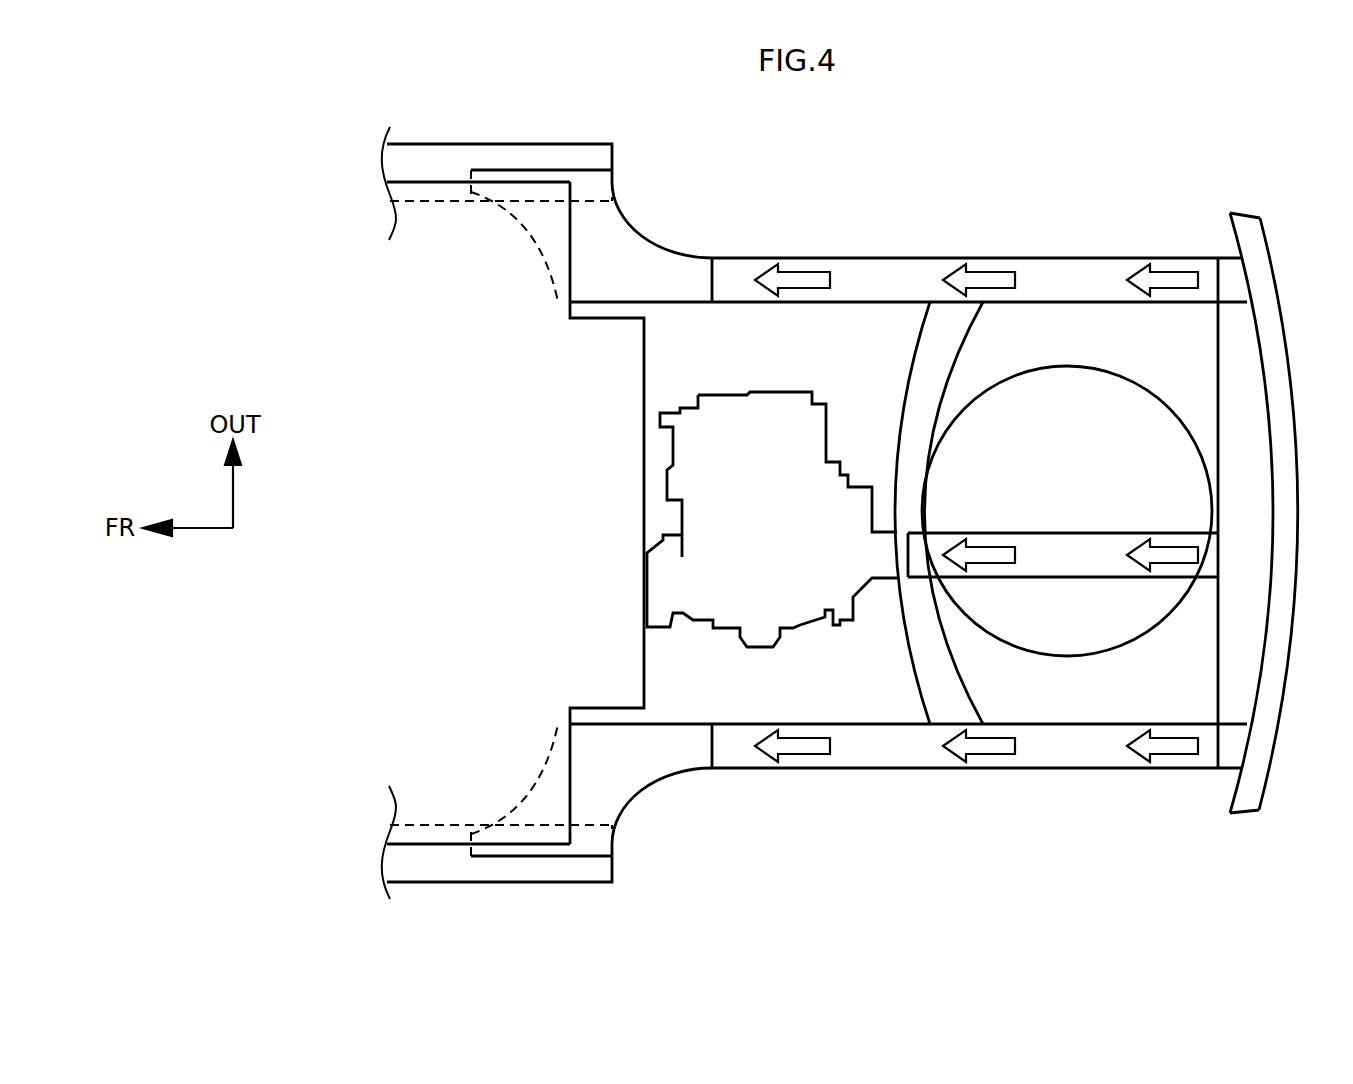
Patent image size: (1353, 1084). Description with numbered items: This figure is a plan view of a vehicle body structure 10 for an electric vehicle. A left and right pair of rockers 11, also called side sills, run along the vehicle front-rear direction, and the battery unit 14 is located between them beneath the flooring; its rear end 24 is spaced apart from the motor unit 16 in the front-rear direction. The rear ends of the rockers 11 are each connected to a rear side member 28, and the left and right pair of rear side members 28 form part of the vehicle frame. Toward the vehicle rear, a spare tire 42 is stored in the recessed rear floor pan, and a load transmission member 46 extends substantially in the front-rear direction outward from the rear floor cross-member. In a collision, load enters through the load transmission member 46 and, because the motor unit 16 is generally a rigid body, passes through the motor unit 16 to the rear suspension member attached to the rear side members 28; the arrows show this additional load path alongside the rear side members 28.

The vehicle body structure 10 is at (1000, 213).
The rockers 11 is at (442, 157).
The battery unit 14 is at (453, 685).
The motor unit 16 is at (758, 628).
The rear end 24 is at (633, 675).
The rear side members 28 is at (858, 265).
The spare tire 42 is at (1080, 640).
The load transmission member 46 is at (1075, 534).